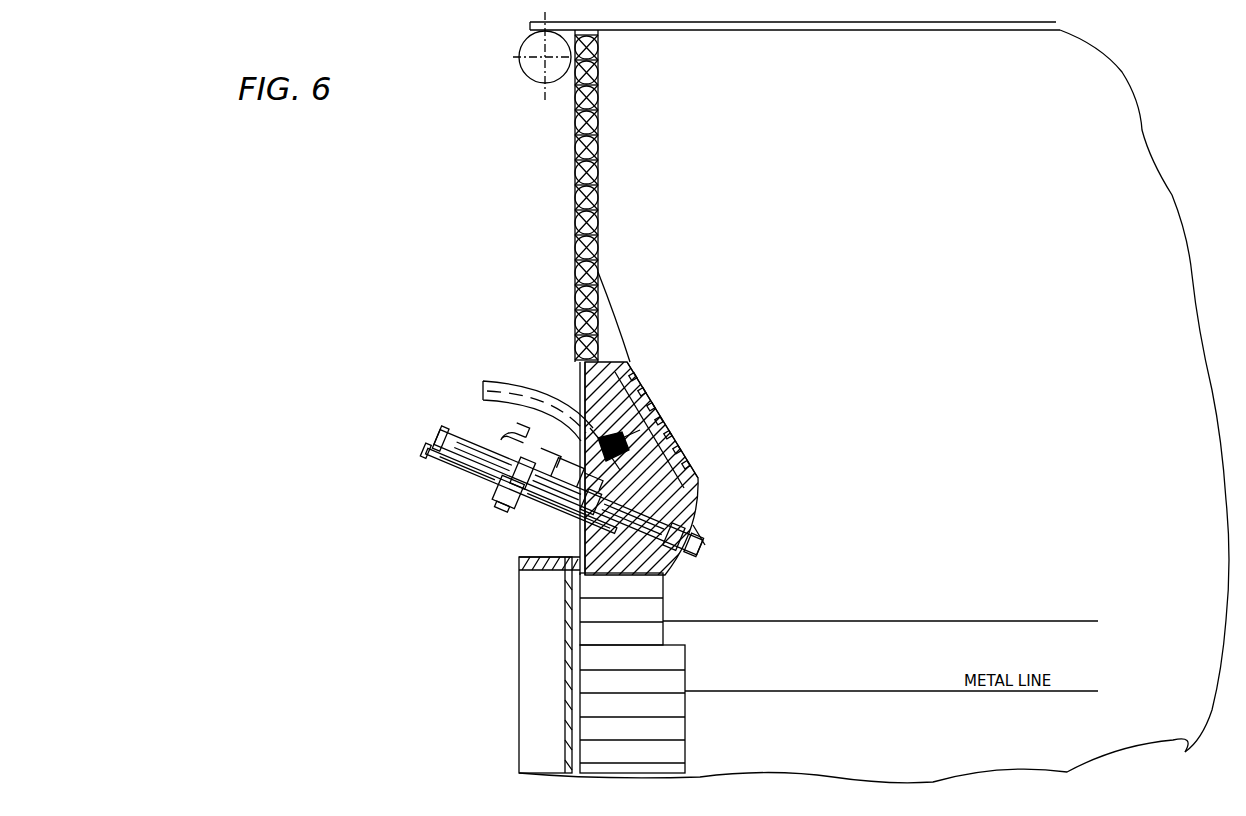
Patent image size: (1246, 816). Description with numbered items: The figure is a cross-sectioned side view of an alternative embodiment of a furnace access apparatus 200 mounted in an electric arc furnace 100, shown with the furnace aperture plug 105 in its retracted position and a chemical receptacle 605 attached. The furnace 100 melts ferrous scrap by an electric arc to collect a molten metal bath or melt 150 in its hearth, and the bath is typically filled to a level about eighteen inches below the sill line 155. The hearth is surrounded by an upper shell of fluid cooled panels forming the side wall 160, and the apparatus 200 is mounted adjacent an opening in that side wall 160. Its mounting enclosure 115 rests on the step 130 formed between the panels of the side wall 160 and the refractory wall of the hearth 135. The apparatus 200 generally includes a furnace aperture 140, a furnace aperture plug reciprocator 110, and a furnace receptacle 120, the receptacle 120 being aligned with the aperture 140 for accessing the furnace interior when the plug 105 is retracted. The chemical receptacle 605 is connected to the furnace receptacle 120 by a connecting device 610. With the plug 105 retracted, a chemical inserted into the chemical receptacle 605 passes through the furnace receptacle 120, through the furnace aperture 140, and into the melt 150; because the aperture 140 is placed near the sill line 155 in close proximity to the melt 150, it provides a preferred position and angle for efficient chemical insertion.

The furnace 100 is at (1058, 107).
The furnace aperture plug 105 is at (535, 496).
The furnace aperture plug reciprocator 110 is at (510, 503).
The mounting enclosure 115 is at (652, 372).
The furnace receptacle 120 is at (656, 485).
The step 130 is at (585, 584).
The refractory wall of the hearth 135 is at (582, 690).
The furnace aperture 140 is at (707, 532).
The melt 150 is at (912, 755).
The sill line 155 is at (947, 612).
The side wall 160 is at (597, 210).
The furnace access apparatus 200 is at (650, 318).
The chemical receptacle 605 is at (515, 370).
The connecting device 610 is at (600, 419).